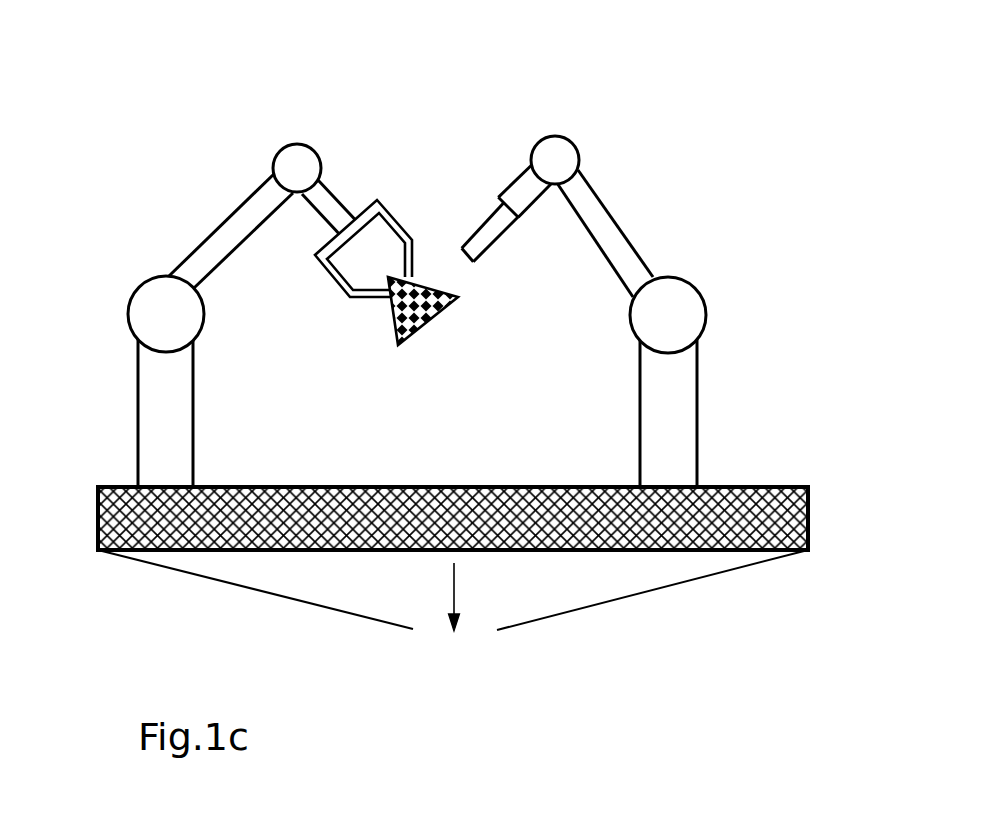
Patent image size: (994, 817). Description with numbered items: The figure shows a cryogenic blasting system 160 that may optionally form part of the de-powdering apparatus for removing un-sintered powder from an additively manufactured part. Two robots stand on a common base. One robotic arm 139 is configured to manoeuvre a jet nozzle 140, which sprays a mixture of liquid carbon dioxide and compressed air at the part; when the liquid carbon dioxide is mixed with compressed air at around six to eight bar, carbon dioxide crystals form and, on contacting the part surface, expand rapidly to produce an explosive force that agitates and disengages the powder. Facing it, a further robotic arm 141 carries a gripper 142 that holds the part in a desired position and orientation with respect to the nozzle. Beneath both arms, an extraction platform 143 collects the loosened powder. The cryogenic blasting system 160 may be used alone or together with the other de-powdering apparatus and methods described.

The cryogenic blasting system 160 is at (273, 113).
The further robotic arm 141 is at (208, 203).
The gripper 142 is at (397, 217).
The jet nozzle 140 is at (477, 198).
The robotic arm 139 is at (628, 208).
The extraction platform 143 is at (810, 517).